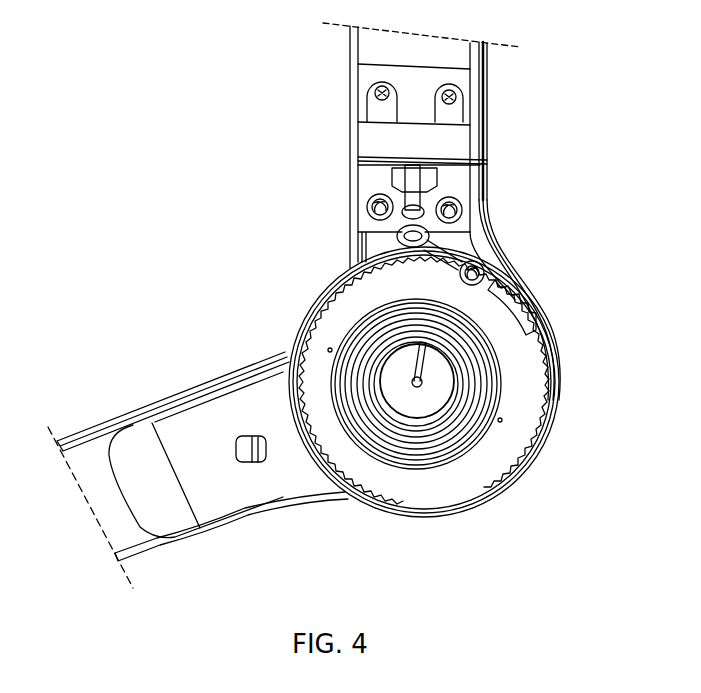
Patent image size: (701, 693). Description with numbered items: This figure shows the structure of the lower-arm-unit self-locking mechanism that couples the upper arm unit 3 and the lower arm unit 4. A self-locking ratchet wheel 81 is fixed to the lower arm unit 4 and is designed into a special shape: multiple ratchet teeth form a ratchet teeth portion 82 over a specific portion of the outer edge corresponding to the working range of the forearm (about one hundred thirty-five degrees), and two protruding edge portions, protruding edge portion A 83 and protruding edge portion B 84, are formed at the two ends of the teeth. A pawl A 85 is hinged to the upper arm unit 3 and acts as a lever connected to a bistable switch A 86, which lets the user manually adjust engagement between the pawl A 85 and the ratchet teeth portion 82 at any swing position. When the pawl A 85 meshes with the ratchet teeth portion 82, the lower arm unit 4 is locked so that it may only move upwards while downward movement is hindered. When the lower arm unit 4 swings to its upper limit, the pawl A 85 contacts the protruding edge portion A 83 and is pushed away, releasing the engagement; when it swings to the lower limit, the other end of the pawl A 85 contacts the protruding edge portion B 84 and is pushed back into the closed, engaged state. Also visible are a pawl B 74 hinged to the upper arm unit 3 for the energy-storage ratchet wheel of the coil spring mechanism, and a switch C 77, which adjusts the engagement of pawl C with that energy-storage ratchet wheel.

The upper arm unit 3 is at (348, 153).
The lower arm unit 4 is at (157, 400).
The pawl B 74 is at (480, 244).
The switch C 77 is at (237, 443).
The self-locking ratchet wheel 81 is at (510, 370).
The ratchet teeth portion 82 is at (510, 313).
The protruding edge portion A 83 is at (293, 325).
The protruding edge portion B 84 is at (527, 433).
The pawl A 85 is at (398, 248).
The switch A 86 is at (367, 200).